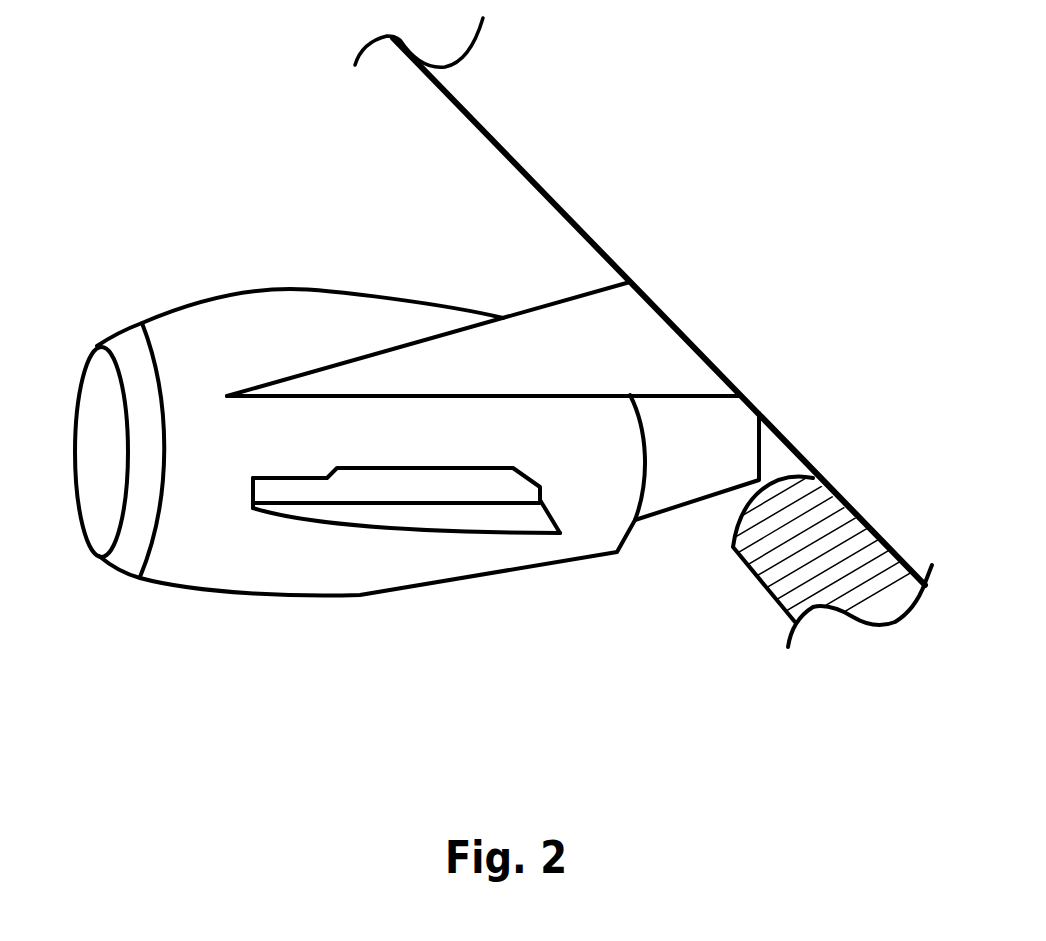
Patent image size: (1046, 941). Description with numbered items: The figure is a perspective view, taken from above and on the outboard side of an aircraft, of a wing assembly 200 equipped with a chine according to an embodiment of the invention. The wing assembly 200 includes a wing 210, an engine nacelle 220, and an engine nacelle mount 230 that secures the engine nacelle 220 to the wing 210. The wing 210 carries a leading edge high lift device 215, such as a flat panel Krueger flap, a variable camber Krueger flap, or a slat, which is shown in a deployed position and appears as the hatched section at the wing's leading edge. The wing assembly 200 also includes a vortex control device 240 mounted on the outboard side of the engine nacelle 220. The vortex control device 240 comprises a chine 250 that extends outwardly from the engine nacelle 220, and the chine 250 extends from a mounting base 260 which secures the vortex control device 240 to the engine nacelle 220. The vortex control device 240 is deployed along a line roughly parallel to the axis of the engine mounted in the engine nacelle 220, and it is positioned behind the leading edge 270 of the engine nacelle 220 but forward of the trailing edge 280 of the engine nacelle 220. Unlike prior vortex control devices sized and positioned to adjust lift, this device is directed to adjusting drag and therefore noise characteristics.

The wing assembly 200 is at (287, 738).
The wing 210 is at (538, 143).
The leading edge high lift device 215 is at (820, 513).
The engine nacelle 220 is at (567, 570).
The engine nacelle mount 230 is at (643, 358).
The vortex control device 240 is at (237, 502).
The chine 250 is at (500, 512).
The mounting base 260 is at (290, 490).
The leading edge of the engine nacelle 270 is at (97, 345).
The trailing edge of the engine nacelle 280 is at (625, 555).